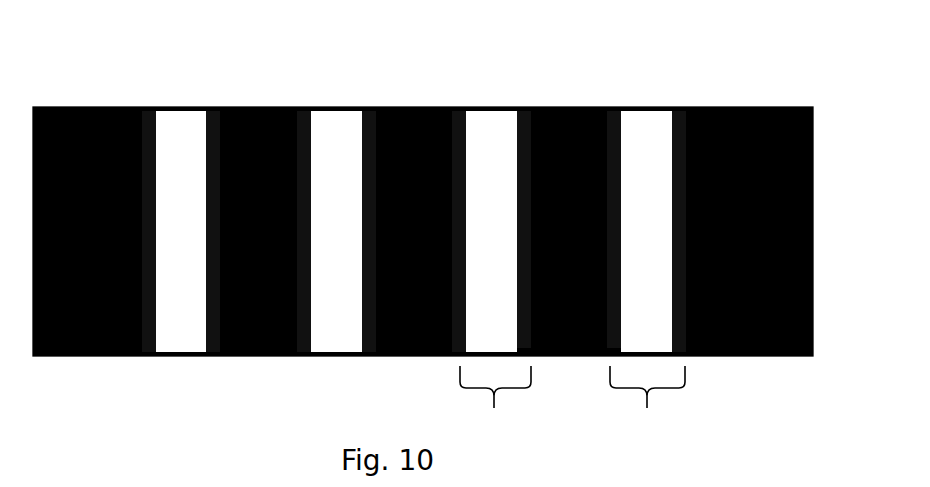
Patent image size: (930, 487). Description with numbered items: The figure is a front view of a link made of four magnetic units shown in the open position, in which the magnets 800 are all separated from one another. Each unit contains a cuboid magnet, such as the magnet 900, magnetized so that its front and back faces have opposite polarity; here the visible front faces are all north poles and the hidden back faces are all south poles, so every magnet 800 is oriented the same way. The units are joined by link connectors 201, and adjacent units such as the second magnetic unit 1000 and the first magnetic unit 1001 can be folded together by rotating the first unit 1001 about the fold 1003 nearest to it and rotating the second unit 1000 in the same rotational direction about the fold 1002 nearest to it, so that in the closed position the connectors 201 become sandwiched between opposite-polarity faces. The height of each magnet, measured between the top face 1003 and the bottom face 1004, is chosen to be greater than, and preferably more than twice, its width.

The magnet 900 is at (777, 120).
The link connectors 201 is at (491, 191).
The fold line 1003 is at (168, 100).
The magnets 800 is at (414, 187).
The bottom face 1004 is at (170, 345).
The fold line 1002 is at (537, 350).
The second magnetic unit 1000 is at (495, 402).
The first magnetic unit 1001 is at (647, 402).